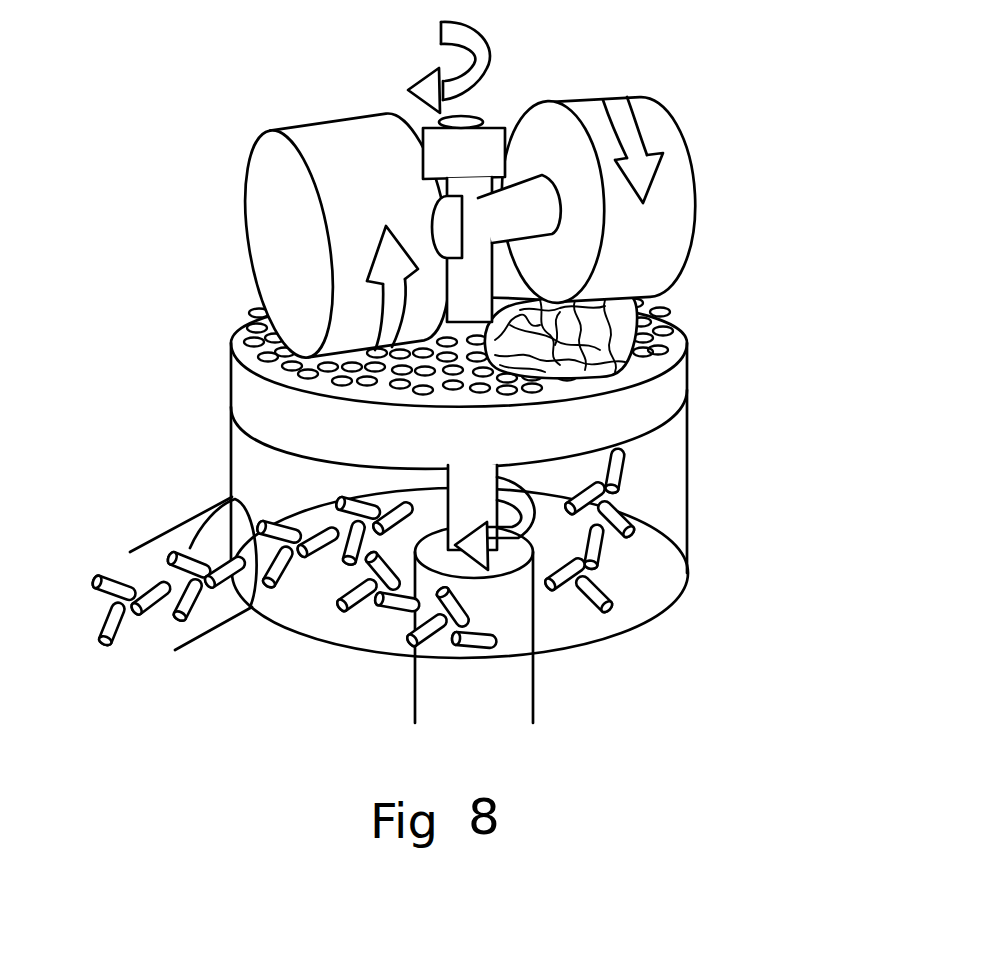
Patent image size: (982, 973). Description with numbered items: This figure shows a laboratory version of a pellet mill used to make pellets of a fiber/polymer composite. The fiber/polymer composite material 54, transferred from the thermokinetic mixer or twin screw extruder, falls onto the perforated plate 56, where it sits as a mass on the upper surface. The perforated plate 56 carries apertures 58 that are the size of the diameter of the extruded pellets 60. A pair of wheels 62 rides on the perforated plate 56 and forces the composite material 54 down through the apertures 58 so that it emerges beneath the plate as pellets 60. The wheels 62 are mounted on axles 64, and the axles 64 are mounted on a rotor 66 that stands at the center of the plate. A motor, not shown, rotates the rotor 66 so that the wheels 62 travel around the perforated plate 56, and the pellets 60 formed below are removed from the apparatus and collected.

The fiber/polymer composite material 54 is at (645, 297).
The perforated plate 56 is at (670, 332).
The apertures 58 is at (632, 348).
The pellets 60 is at (190, 548).
The wheels 62 is at (249, 157).
The axles 64 is at (523, 195).
The rotor 66 is at (437, 118).